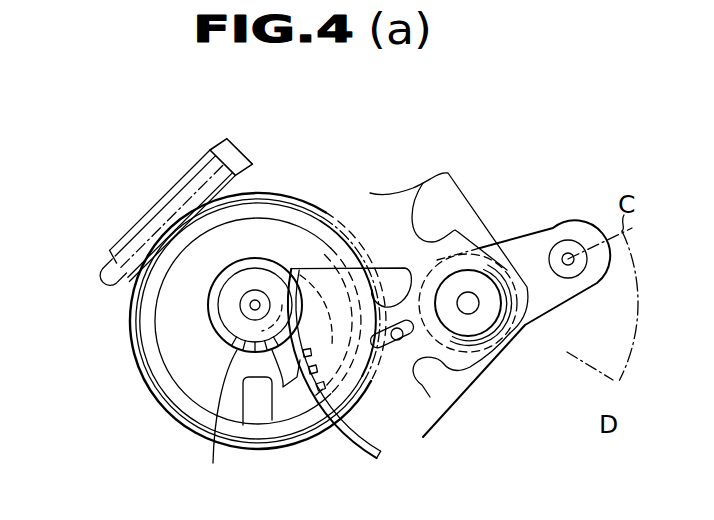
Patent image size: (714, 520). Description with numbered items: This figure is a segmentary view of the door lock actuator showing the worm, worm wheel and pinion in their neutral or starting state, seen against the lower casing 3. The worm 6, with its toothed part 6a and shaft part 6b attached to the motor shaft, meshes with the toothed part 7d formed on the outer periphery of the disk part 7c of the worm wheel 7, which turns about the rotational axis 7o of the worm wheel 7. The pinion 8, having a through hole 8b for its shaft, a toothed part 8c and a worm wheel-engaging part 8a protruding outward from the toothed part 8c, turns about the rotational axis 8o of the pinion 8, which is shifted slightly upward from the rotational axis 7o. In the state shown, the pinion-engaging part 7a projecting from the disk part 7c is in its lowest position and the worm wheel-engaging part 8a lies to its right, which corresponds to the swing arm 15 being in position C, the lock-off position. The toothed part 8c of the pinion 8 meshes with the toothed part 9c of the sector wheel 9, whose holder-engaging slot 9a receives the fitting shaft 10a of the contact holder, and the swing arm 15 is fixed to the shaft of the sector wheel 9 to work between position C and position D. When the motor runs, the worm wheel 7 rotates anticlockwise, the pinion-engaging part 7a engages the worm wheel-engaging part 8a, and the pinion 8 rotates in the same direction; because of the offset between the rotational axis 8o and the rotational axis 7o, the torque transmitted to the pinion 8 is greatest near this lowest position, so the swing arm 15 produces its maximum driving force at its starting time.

The lower casing 3 is at (463, 201).
The worm 6 is at (165, 192).
The toothed part 6a is at (123, 233).
The shaft part 6b is at (225, 153).
The worm wheel 7 is at (161, 407).
The pinion-engaging part 7a is at (213, 463).
The disk part 7c is at (240, 240).
The toothed part 7d is at (305, 205).
The rotational axis of the worm wheel 7o is at (227, 336).
The pinion 8 is at (247, 315).
The worm wheel-engaging part 8a is at (283, 397).
The through hole 8b is at (245, 312).
The toothed part 8c is at (250, 395).
The rotational axis of the pinion 8o is at (250, 303).
The sector wheel 9 is at (368, 462).
The holder-engaging slot 9a is at (380, 343).
The toothed part 9c is at (313, 420).
The fitting shaft 10a is at (402, 341).
The swing arm 15 is at (540, 230).